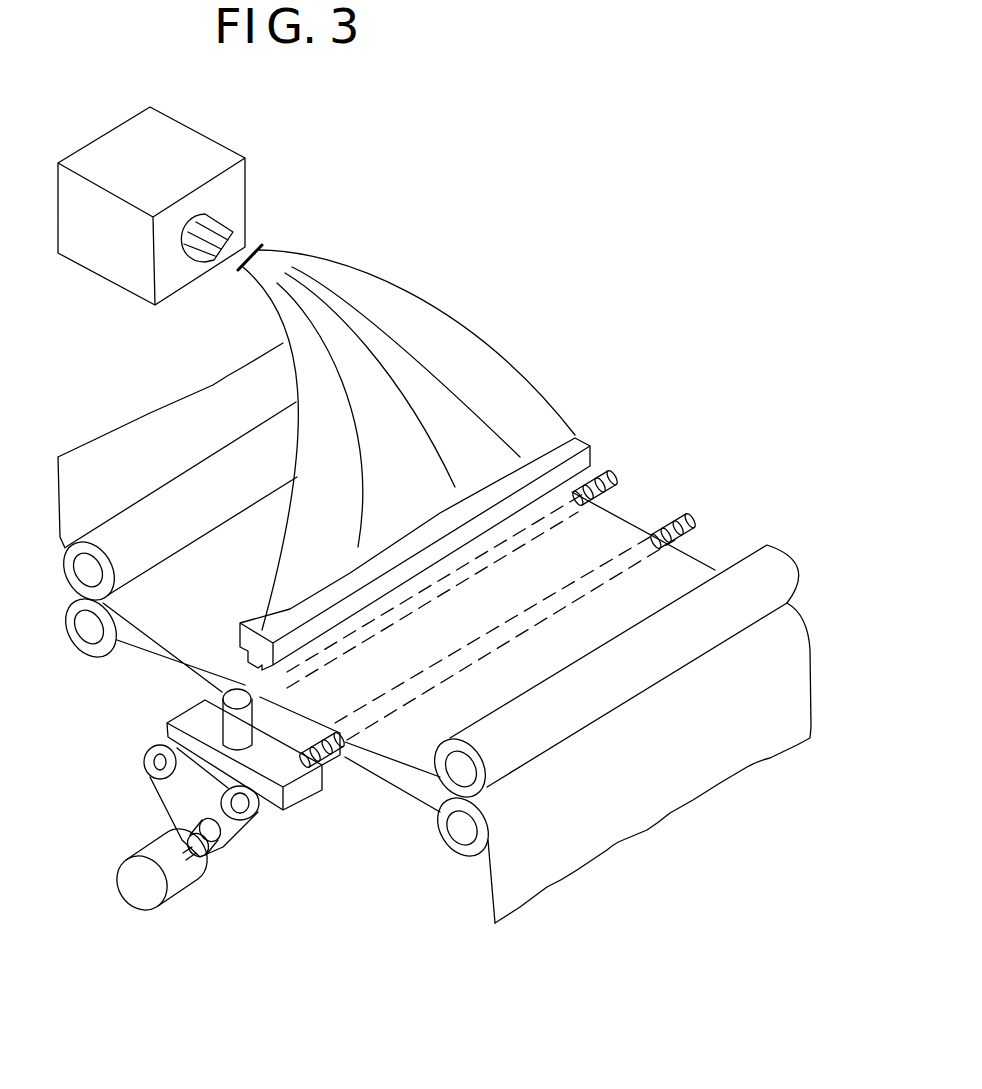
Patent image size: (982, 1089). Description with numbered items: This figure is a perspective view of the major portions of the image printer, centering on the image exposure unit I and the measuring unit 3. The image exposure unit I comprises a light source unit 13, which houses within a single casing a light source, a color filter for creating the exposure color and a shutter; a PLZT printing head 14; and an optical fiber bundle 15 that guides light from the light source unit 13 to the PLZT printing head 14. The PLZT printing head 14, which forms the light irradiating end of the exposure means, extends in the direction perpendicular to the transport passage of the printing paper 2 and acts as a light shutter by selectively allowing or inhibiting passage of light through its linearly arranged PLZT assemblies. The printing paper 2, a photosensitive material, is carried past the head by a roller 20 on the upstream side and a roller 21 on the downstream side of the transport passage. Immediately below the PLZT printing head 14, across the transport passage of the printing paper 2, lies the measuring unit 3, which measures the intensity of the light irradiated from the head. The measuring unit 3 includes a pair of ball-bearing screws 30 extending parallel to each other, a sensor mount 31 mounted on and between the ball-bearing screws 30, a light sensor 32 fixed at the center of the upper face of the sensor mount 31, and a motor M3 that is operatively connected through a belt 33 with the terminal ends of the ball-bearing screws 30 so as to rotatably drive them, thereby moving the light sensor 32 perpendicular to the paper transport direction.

The light source unit 13 is at (103, 260).
The optical fiber bundle 15 is at (422, 305).
The image exposure unit I is at (593, 232).
The PLZT printing head 14 is at (578, 434).
The ball-bearing screws 30 is at (690, 520).
The printing paper 2 is at (793, 680).
The roller 21 is at (437, 773).
The roller 20 is at (67, 573).
The measuring unit 3 is at (308, 822).
The sensor mount 31 is at (182, 718).
The light sensor 32 is at (223, 693).
The belt 33 is at (172, 795).
The motor M3 is at (182, 880).